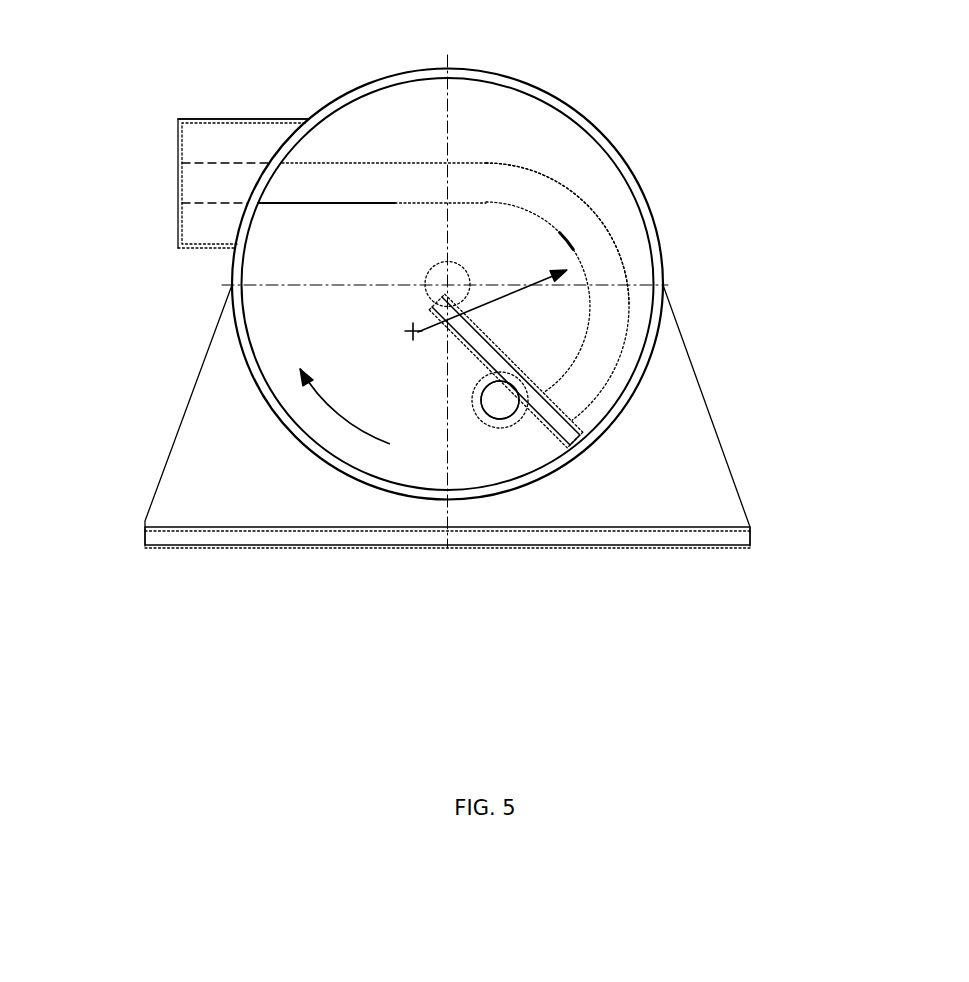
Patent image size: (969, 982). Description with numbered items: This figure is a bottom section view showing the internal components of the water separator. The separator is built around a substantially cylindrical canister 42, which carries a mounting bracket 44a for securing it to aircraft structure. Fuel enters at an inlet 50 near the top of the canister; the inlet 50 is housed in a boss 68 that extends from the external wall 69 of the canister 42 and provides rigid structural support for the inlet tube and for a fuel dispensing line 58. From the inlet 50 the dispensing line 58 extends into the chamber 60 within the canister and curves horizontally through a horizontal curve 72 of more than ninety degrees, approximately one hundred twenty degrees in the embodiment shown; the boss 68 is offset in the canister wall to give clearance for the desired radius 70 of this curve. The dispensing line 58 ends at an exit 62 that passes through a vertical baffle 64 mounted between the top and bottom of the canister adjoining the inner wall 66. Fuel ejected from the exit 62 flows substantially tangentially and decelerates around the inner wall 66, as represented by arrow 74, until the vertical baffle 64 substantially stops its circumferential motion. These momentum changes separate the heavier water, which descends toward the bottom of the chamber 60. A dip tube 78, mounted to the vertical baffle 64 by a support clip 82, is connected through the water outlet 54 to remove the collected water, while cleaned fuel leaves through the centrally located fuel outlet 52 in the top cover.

The canister 42 is at (661, 250).
The mounting bracket 44a is at (750, 535).
The inlet 50 is at (177, 183).
The fuel outlet 52 is at (427, 292).
The water outlet 54 is at (497, 415).
The fuel dispensing line 58 is at (558, 183).
The chamber 60 is at (300, 353).
The exit 62 is at (547, 428).
The vertical baffle 64 is at (470, 332).
The inner wall 66 is at (615, 160).
The boss 68 is at (213, 119).
The external wall 69 is at (340, 94).
The radius 70 is at (550, 276).
The horizontal curve 72 is at (598, 218).
The arrow 74 is at (330, 405).
The dip tube 78 is at (520, 400).
The support clip 82 is at (483, 418).